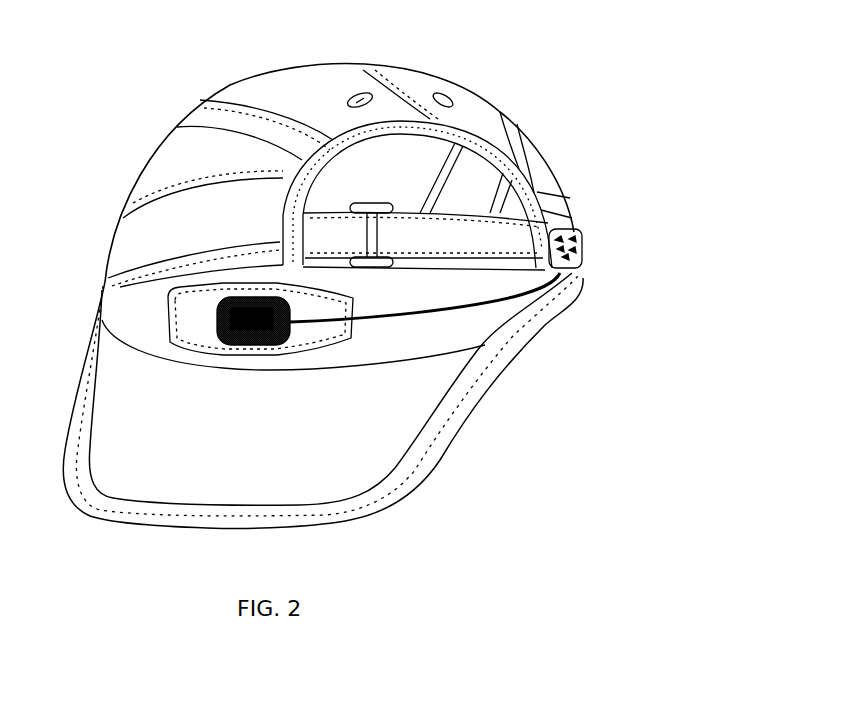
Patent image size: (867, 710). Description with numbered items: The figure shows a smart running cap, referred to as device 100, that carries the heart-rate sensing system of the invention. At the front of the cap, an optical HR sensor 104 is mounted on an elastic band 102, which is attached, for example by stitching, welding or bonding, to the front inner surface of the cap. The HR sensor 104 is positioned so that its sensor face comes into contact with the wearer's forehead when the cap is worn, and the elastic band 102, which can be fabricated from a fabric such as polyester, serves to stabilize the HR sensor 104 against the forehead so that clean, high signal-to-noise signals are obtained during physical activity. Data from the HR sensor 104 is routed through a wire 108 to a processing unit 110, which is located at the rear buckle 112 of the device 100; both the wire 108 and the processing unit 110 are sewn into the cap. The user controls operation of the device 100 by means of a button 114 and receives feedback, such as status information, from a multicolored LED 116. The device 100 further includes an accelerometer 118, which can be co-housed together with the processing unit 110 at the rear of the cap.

The device 100 is at (339, 172).
The elastic band 102 is at (197, 302).
The HR sensor 104 is at (217, 320).
The wire 108 is at (473, 310).
The processing unit 110 is at (490, 246).
The rear buckle 112 is at (387, 220).
The button 114 is at (446, 96).
The multicolored LED 116 is at (367, 95).
The accelerometer 118 is at (583, 274).